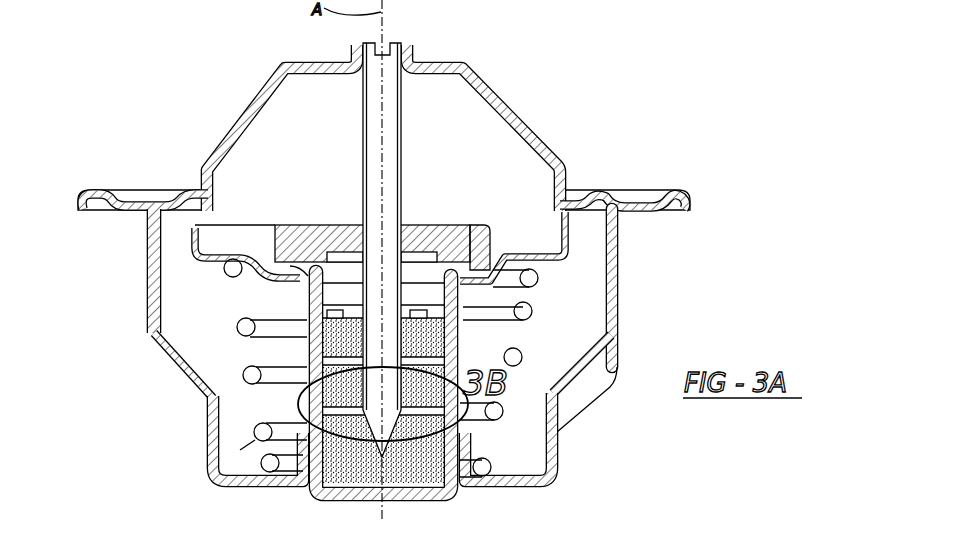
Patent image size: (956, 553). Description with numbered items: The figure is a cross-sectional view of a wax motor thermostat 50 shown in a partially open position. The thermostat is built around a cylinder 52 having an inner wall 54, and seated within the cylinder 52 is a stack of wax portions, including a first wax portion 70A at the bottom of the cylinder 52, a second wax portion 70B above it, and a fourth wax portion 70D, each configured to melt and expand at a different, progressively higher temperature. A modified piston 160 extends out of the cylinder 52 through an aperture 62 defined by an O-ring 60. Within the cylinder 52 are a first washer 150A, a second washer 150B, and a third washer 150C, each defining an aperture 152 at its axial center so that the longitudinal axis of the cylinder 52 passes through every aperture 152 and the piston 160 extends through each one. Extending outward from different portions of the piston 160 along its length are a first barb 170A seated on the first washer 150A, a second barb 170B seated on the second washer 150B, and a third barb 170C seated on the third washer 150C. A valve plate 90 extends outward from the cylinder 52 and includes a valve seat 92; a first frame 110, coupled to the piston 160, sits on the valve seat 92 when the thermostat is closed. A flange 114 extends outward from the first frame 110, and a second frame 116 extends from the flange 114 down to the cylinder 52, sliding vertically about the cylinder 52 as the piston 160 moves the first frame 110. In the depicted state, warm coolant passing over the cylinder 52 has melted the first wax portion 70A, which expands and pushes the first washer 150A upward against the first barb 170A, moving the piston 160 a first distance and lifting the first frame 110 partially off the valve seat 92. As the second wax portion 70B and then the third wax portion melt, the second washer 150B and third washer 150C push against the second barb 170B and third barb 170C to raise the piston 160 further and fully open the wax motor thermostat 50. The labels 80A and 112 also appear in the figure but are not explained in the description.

The wax motor thermostat 50 is at (108, 80).
The cylinder 52 is at (445, 493).
The inner wall 54 is at (457, 298).
The O-ring 60 is at (447, 228).
The aperture 62 is at (403, 225).
The first wax portion 70A is at (335, 483).
The second wax portion 70B is at (452, 440).
The fourth wax portion 70D is at (457, 338).
The first valve 80A is at (497, 0).
The valve plate 90 is at (457, 283).
The valve seat 92 is at (575, 219).
The first frame 110 is at (283, 78).
The left flange shoulder 112 is at (212, 194).
The flange 114 is at (675, 188).
The second frame 116 is at (150, 238).
The first washer 150A is at (345, 348).
The second washer 150B is at (363, 355).
The third washer 150C is at (330, 315).
The aperture 152 is at (457, 320).
The piston 160 is at (387, 188).
The first barb 170A is at (307, 410).
The second barb 170B is at (363, 345).
The third barb 170C is at (345, 303).